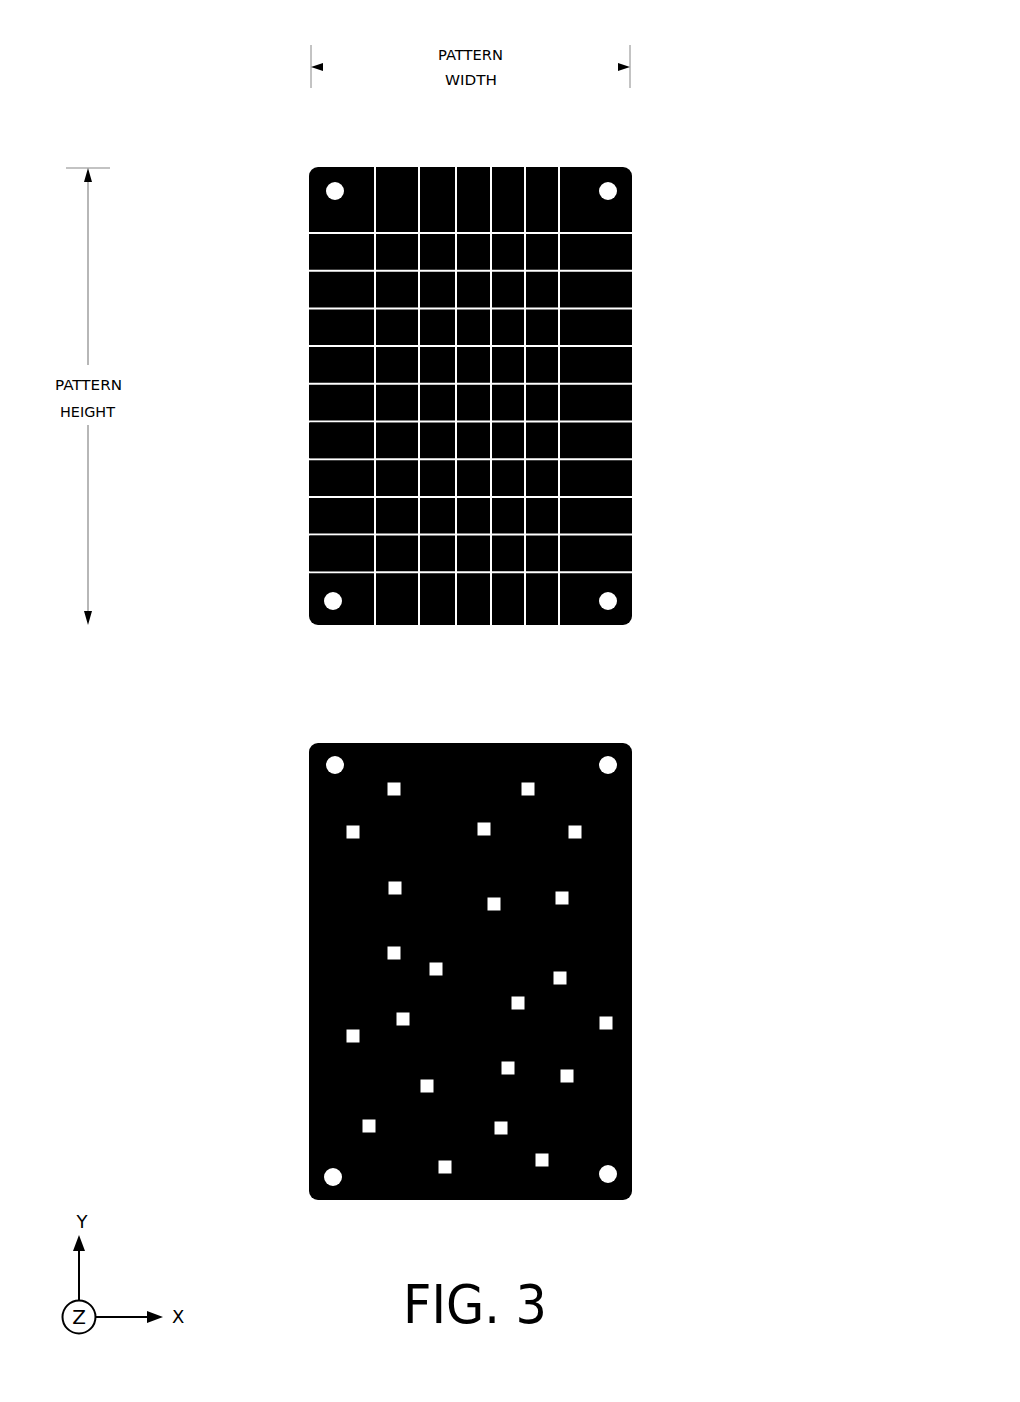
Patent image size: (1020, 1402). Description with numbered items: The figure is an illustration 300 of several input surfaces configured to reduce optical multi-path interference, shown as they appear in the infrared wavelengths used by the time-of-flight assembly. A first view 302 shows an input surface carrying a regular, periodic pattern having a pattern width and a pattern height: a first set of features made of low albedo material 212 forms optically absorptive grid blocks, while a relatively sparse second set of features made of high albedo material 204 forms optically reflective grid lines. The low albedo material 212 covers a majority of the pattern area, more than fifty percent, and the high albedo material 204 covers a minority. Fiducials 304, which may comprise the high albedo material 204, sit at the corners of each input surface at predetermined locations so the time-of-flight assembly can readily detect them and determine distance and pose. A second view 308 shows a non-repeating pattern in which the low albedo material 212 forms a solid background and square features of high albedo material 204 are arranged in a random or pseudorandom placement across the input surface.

The illustration 300 is at (750, 45).
The first view 302 is at (652, 176).
The fiducial 304 is at (330, 760).
The high albedo material 204 is at (335, 456).
The low albedo material 212 is at (340, 552).
The second view 308 is at (666, 731).